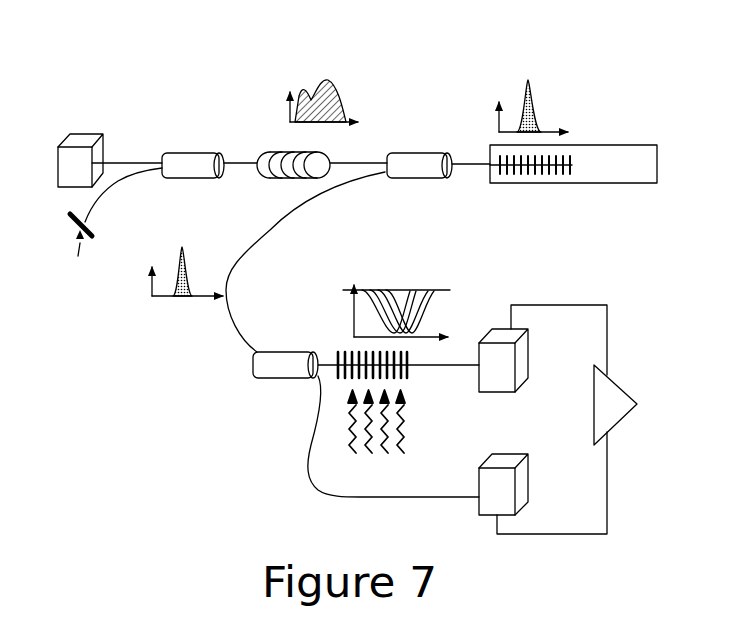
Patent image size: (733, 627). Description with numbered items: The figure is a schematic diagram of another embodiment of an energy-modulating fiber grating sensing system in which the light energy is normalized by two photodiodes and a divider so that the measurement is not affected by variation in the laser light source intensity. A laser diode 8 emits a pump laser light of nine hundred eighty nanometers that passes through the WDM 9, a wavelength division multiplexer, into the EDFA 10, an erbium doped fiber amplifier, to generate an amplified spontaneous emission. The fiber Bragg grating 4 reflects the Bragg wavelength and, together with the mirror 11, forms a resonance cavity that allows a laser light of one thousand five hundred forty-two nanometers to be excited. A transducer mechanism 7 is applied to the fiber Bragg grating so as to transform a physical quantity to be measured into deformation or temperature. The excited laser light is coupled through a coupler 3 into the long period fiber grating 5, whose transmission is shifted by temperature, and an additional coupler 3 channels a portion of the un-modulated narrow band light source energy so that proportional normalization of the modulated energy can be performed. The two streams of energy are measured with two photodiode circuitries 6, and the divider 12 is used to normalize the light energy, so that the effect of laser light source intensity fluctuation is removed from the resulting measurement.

The coupler 3 is at (438, 151).
The fiber Bragg grating 4 is at (562, 173).
The long period fiber grating 5 is at (340, 382).
The photodiode circuitries 6 is at (528, 345).
The transducer mechanism 7 is at (574, 146).
The laser diode 8 is at (60, 147).
The WDM 9 is at (185, 153).
The EDFA 10 is at (285, 150).
The mirror 11 is at (78, 258).
The divider 12 is at (632, 392).